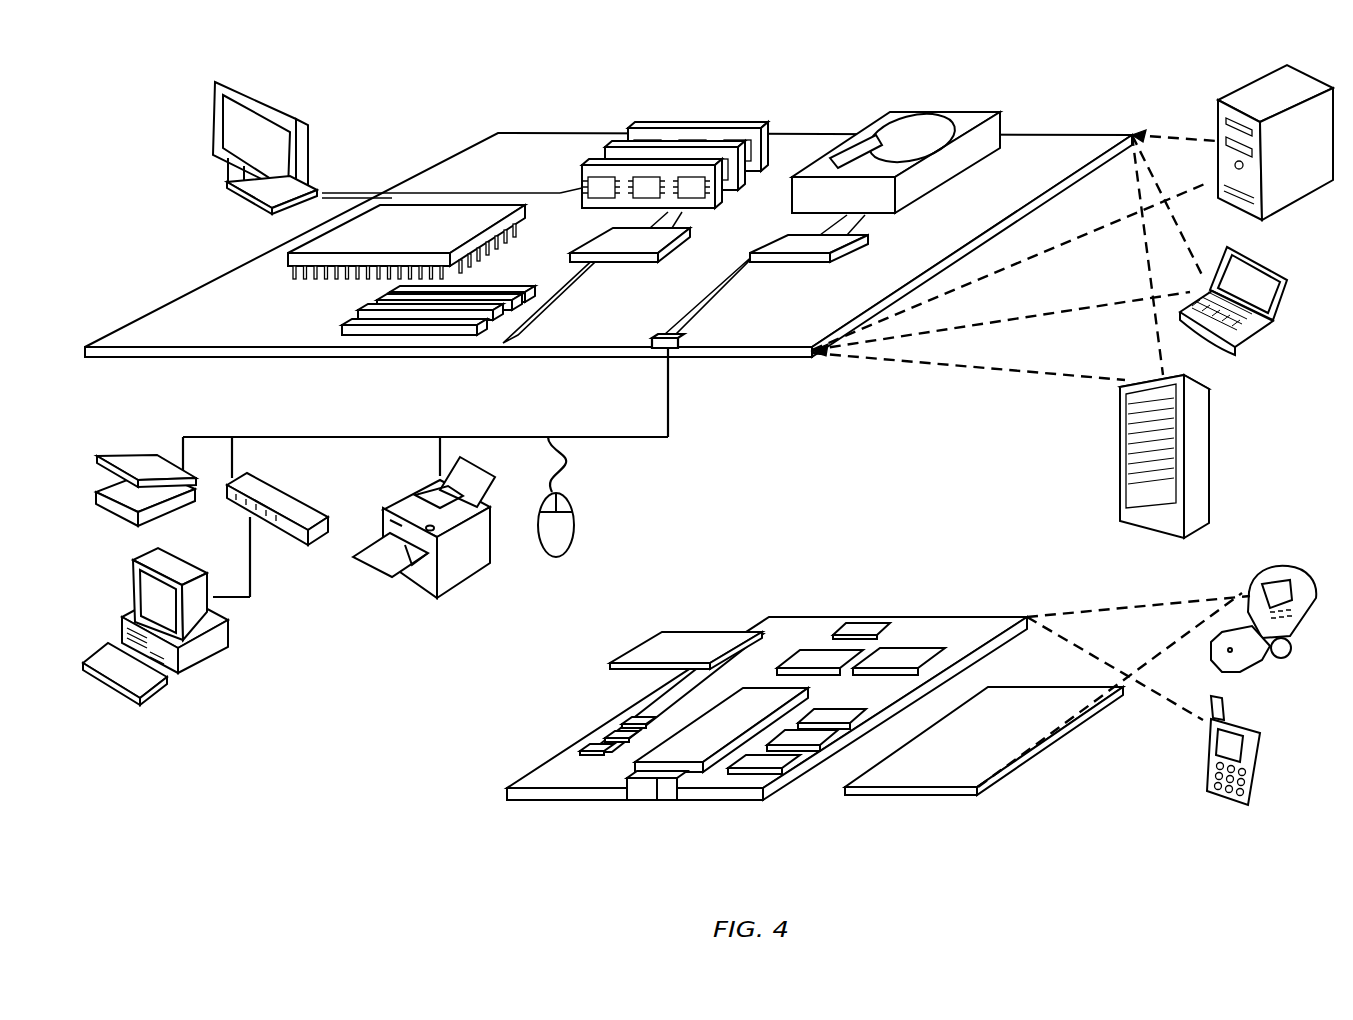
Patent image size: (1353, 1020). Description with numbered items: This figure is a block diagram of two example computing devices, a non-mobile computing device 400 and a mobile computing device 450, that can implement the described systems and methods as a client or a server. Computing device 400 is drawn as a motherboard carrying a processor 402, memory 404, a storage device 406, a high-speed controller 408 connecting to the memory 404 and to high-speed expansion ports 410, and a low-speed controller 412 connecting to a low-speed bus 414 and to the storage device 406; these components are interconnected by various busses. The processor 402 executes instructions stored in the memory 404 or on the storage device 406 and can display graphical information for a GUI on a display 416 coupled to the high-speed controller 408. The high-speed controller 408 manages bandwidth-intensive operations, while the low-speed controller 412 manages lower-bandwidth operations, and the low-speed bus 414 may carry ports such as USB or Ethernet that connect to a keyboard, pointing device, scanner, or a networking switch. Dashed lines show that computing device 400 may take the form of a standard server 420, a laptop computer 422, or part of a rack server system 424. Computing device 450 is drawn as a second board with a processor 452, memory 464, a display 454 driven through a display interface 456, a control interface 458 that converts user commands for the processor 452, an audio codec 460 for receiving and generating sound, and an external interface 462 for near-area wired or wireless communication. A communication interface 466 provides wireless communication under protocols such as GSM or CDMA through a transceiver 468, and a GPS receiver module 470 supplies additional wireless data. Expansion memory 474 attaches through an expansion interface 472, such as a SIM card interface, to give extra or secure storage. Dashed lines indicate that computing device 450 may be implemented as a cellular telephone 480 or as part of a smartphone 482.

The computing device 400 is at (111, 94).
The processor 402 is at (297, 260).
The memory 404 is at (644, 126).
The storage device 406 is at (882, 114).
The high-speed controller 408 is at (600, 245).
The high-speed expansion ports 410 is at (360, 320).
The low-speed controller 412 is at (787, 242).
The low-speed bus 414 is at (673, 348).
The display 416 is at (222, 82).
The standard server 420 is at (1218, 118).
The laptop computer 422 is at (1287, 280).
The rack server system 424 is at (1120, 478).
The computing device 450 is at (485, 799).
The processor 452 is at (693, 752).
The display 454 is at (940, 772).
The display interface 456 is at (765, 760).
The control interface 458 is at (793, 737).
The audio codec 460 is at (828, 717).
The external interface 462 is at (657, 790).
The memory 464 is at (605, 743).
The communication interface 466 is at (820, 657).
The transceiver 468 is at (900, 655).
The GPS receiver module 470 is at (872, 622).
The expansion interface 472 is at (743, 632).
The expansion memory 474 is at (664, 632).
The cellular telephone 480 is at (1270, 576).
The smartphone 482 is at (1207, 762).